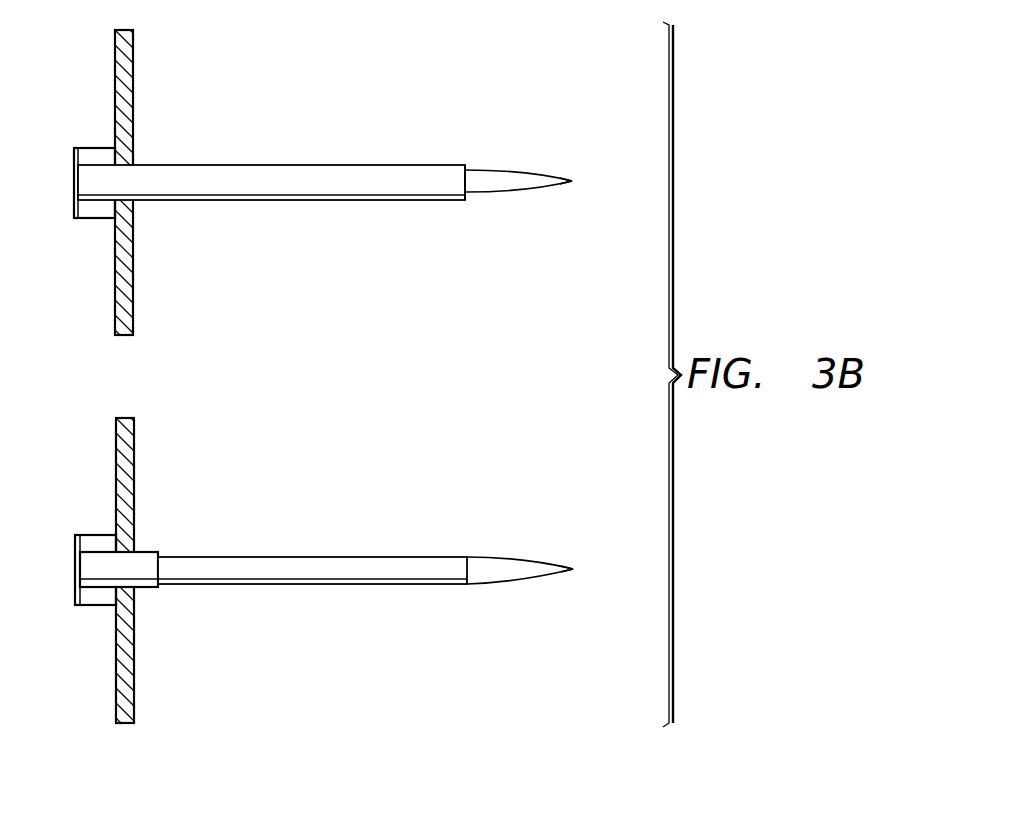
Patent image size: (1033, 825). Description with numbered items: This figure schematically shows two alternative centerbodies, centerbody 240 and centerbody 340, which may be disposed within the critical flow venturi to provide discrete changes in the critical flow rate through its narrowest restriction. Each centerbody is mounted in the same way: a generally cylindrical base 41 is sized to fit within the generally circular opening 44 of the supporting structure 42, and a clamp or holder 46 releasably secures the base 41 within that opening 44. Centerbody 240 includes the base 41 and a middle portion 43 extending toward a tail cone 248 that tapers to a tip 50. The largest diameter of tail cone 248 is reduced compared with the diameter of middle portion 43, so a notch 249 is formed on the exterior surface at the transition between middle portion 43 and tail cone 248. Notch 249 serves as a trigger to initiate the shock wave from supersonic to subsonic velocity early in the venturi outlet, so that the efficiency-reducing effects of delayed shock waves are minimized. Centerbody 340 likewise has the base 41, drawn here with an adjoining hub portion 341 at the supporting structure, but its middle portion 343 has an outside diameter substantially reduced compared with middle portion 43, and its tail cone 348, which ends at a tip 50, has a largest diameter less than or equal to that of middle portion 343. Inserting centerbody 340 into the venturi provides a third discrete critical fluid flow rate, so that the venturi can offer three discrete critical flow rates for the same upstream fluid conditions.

The base 41 is at (80, 176).
The supporting structure 42 is at (114, 35).
The middle portion 43 is at (323, 192).
The opening 44 is at (118, 553).
The clamp or holder 46 is at (95, 220).
The tip 50 is at (574, 183).
The centerbody 240 is at (325, 168).
The tail cone 248 is at (533, 170).
The notch 249 is at (475, 168).
The centerbody 340 is at (326, 562).
The hub 341 is at (150, 586).
The middle portion 343 is at (350, 584).
The tail cone 348 is at (533, 559).